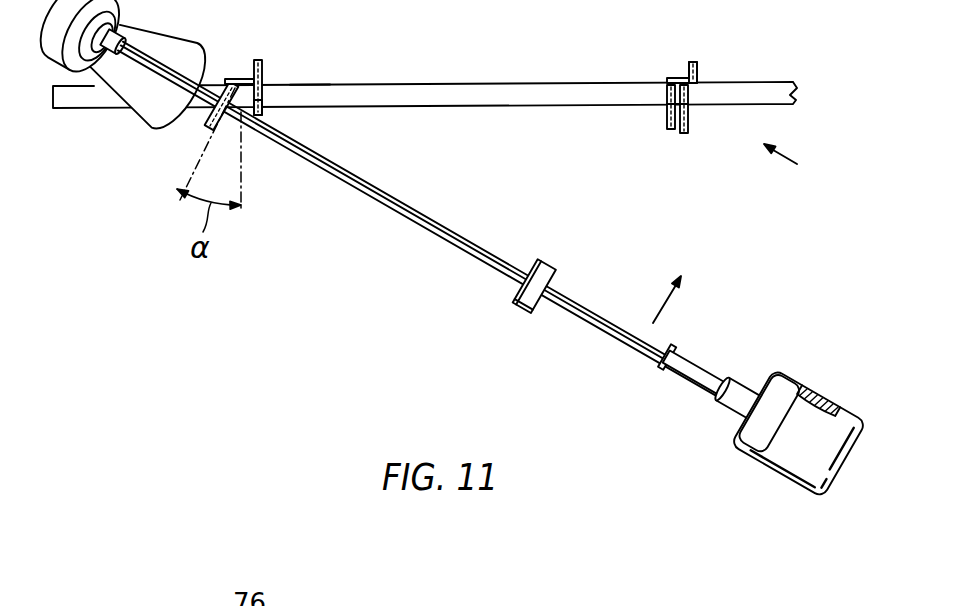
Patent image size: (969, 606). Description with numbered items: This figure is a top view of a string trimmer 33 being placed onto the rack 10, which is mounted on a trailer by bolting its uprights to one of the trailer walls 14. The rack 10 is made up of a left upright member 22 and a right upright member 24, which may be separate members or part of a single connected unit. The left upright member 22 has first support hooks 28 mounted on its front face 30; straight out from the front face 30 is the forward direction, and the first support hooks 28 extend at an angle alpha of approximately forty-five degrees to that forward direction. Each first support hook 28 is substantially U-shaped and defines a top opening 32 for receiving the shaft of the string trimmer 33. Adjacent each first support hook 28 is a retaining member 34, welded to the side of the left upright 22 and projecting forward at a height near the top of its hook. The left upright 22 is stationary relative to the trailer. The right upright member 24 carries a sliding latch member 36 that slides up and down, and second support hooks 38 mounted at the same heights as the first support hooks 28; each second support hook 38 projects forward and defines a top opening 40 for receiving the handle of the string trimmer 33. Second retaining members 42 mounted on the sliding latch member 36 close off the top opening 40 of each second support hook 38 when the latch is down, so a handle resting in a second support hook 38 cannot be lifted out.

The rack 10 is at (803, 165).
The walls 14 is at (781, 105).
The left upright member 22 is at (255, 62).
The right upright member 24 is at (690, 62).
The first support hooks 28 is at (212, 123).
The front face 30 is at (265, 86).
The top opening 32 is at (310, 88).
The string trimmer 33 is at (475, 246).
The retaining member 34 is at (263, 109).
The sliding latch member 36 is at (700, 63).
The second support hooks 38 is at (670, 131).
The top opening 40 is at (667, 104).
The second retaining members 42 is at (686, 133).